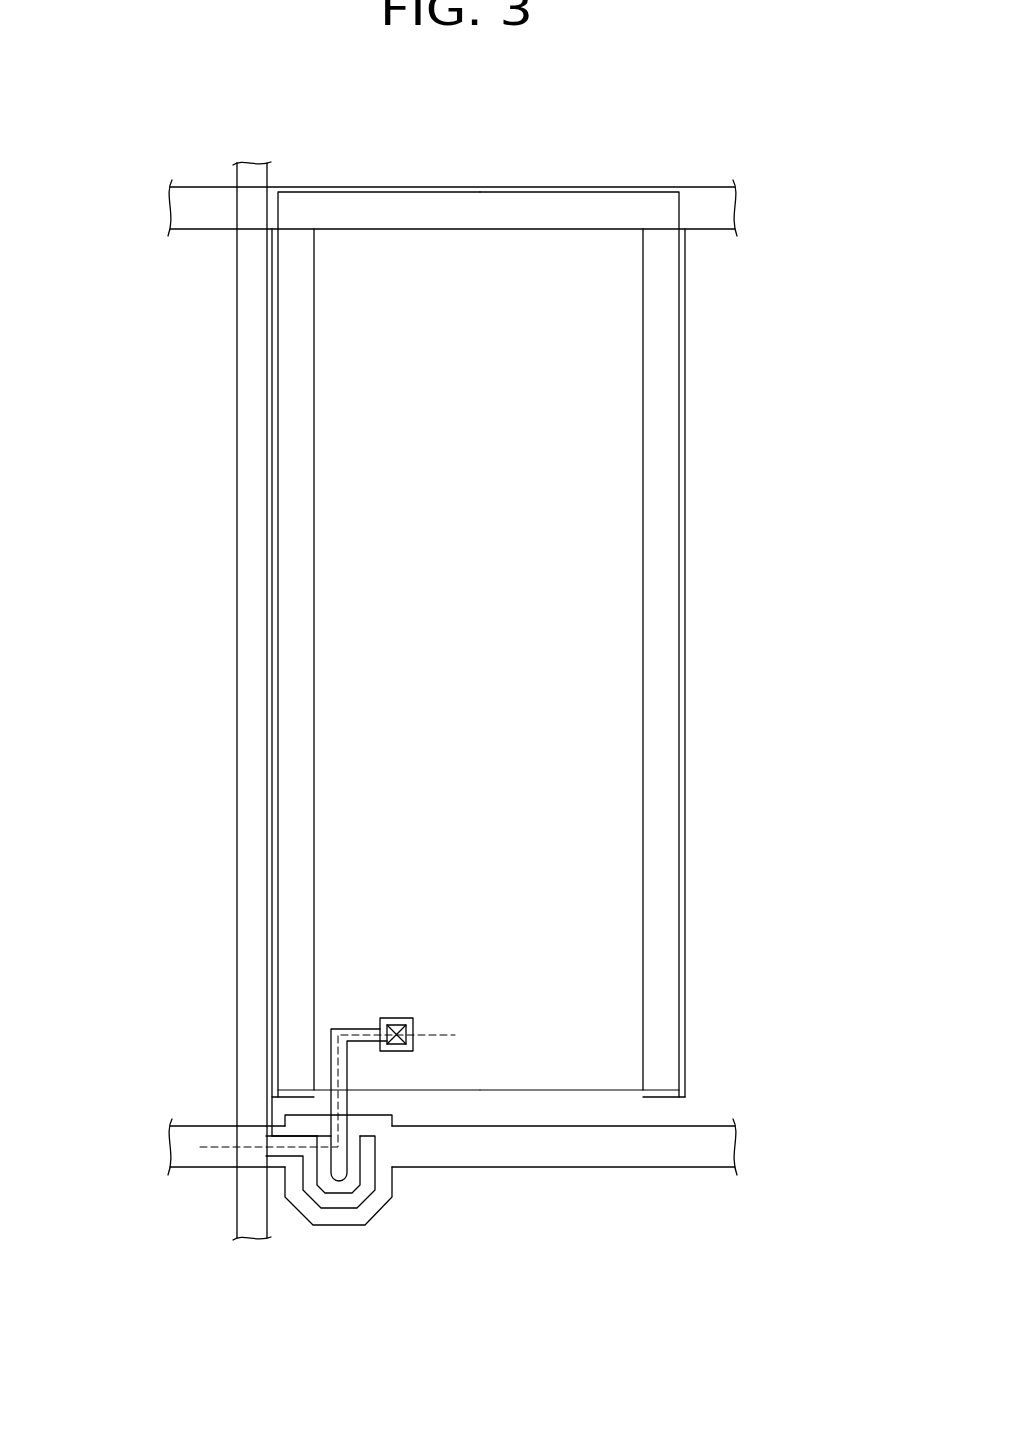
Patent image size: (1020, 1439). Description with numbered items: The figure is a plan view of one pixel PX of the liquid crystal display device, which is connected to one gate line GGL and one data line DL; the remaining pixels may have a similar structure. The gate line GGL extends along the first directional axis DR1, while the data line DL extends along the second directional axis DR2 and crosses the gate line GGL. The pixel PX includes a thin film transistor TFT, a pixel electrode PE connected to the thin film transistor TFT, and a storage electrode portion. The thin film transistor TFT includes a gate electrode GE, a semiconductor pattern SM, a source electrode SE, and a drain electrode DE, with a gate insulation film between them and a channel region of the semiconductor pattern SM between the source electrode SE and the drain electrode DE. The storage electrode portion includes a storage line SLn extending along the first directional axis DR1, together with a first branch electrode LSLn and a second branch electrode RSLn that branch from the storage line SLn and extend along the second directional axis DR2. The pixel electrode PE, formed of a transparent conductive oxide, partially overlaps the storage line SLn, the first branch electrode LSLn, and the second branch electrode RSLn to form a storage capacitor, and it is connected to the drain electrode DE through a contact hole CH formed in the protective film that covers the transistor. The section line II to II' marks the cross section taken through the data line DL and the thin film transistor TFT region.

The pixel PX is at (582, 138).
The storage line SLn is at (177, 210).
The data line DL is at (245, 330).
The first branch electrode LSLn is at (273, 370).
The second branch electrode RSLn is at (688, 412).
The pixel electrode PE is at (328, 458).
The contact hole CH is at (397, 1023).
The gate line GGL is at (583, 1157).
The gate electrode GE is at (393, 1180).
The source electrode SE is at (372, 1197).
The semiconductor pattern SM is at (337, 1192).
The drain electrode DE is at (297, 1190).
The thin film transistor TFT is at (437, 1305).
The section line II is at (324, 1126).
The section line II' is at (457, 1064).
The first directional axis DR1 is at (705, 1277).
The second directional axis DR2 is at (705, 1277).